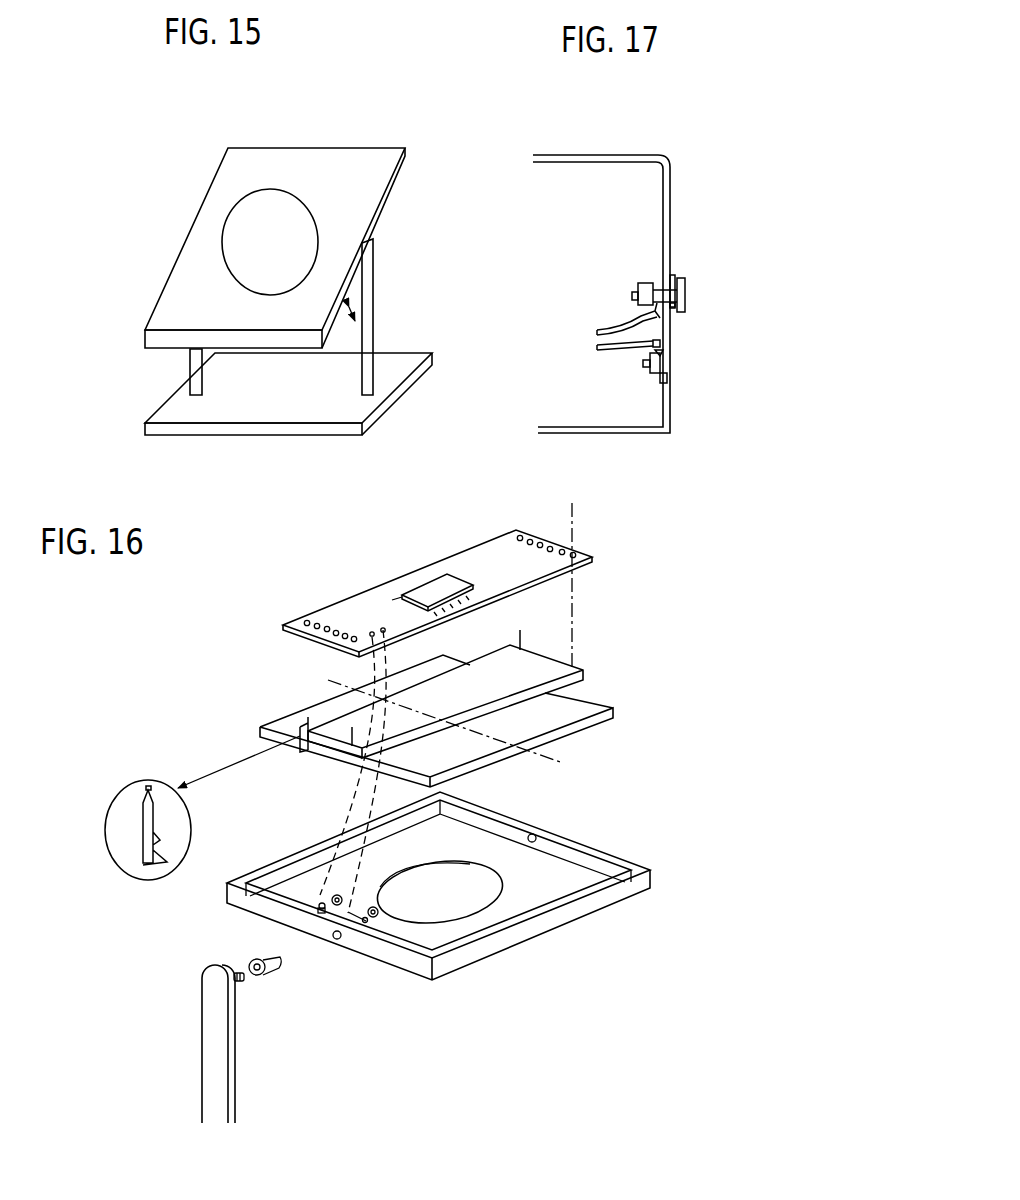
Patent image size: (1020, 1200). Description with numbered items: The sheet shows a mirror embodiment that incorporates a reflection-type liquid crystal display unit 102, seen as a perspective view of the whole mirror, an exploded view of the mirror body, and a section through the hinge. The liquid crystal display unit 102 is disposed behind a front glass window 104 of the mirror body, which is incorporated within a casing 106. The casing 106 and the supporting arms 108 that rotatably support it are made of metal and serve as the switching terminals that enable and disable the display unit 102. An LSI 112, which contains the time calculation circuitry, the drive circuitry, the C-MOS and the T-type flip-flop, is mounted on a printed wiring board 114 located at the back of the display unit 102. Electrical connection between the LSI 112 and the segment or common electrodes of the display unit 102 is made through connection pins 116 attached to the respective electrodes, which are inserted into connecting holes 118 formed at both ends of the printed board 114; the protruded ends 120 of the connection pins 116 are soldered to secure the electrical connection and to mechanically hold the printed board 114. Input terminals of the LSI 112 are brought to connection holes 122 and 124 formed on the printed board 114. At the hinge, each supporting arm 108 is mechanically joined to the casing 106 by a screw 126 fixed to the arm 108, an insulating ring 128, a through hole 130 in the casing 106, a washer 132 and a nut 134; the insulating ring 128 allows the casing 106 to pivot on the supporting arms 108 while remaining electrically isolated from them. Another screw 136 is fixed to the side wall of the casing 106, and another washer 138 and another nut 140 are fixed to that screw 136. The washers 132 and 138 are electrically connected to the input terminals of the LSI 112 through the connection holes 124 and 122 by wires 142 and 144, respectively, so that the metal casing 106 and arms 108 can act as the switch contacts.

In FIG. 16, the liquid crystal display unit 102 is at (542, 703).
In FIG. 15, the front glass window 104 is at (232, 237).
In FIG. 16, the front glass window 104 is at (467, 757).
In FIG. 15, the casing 106 is at (308, 165).
In FIG. 17, the casing 106 is at (668, 157).
In FIG. 16, the casing 106 is at (635, 888).
In FIG. 15, the supporting arm 108 is at (372, 315).
In FIG. 17, the supporting arm 108 is at (685, 293).
In FIG. 16, the supporting arm 108 is at (212, 1045).
In FIG. 16, the LSI 112 is at (430, 587).
In FIG. 16, the printed wiring board 114 is at (483, 563).
In FIG. 16, the connection pin 116 is at (298, 718).
In FIG. 16, the connecting hole 118 is at (295, 618).
In FIG. 16, the protruded end 120 is at (143, 790).
In FIG. 16, the connection hole 122 is at (370, 632).
In FIG. 16, the connection hole 124 is at (382, 628).
In FIG. 17, the screw 126 is at (685, 310).
In FIG. 16, the screw 126 is at (238, 983).
In FIG. 17, the insulating ring 128 is at (672, 277).
In FIG. 16, the insulating ring 128 is at (272, 973).
In FIG. 16, the through hole 130 is at (337, 940).
In FIG. 17, the washer 132 is at (662, 317).
In FIG. 16, the washer 132 is at (367, 922).
In FIG. 17, the nut 134 is at (645, 283).
In FIG. 16, the nut 134 is at (375, 918).
In FIG. 17, the screw 136 is at (645, 367).
In FIG. 16, the screw 136 is at (318, 910).
In FIG. 17, the washer 138 is at (668, 353).
In FIG. 16, the washer 138 is at (320, 905).
In FIG. 17, the nut 140 is at (665, 383).
In FIG. 16, the nut 140 is at (335, 898).
In FIG. 17, the wire 142 is at (617, 317).
In FIG. 17, the wire 144 is at (600, 348).